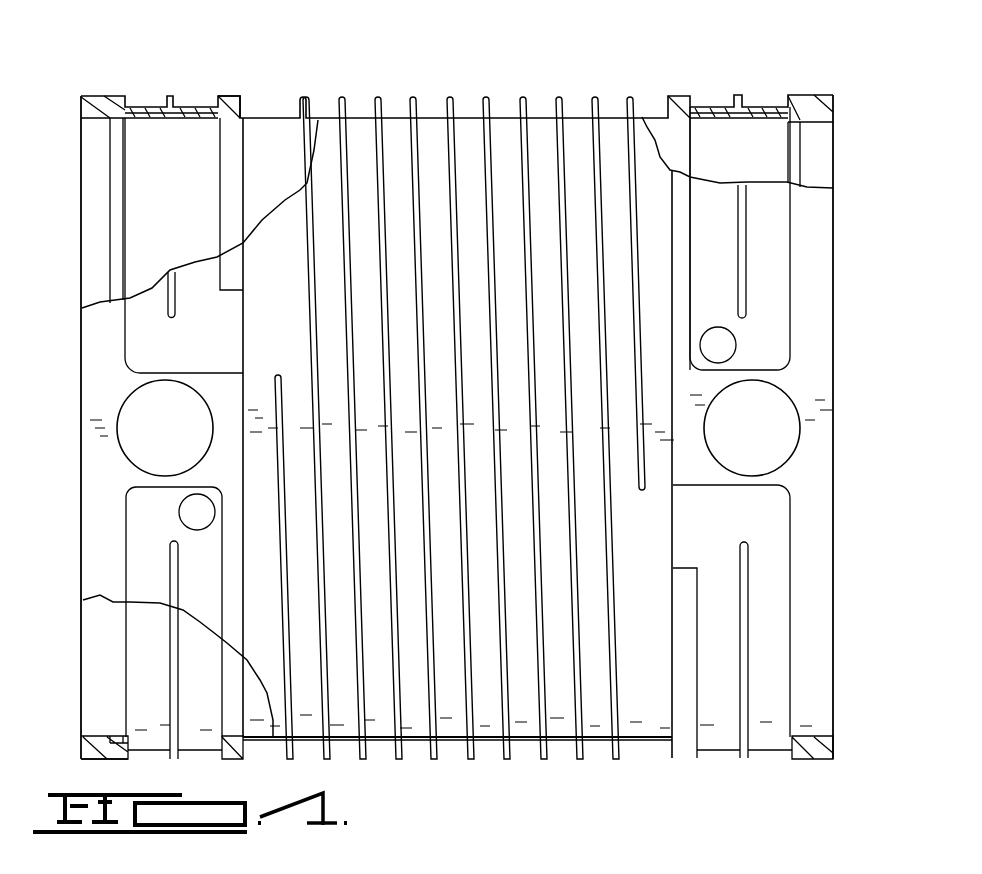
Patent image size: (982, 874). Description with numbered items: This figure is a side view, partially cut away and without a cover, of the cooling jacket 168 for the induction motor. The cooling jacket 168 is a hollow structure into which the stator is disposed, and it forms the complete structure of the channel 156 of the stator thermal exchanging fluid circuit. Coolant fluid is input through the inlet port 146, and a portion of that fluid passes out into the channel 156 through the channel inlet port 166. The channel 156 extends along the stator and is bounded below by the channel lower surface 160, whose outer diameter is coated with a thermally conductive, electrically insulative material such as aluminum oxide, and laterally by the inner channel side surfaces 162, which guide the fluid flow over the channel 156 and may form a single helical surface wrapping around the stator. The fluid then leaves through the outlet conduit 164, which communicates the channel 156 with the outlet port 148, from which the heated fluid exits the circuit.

The inlet port 146 is at (190, 443).
The outlet port 148 is at (778, 443).
The channel 156 is at (397, 323).
The channel lower surface 160 is at (353, 106).
The inner channel side surface 162 is at (520, 100).
The outlet conduit 164 is at (725, 348).
The channel inlet port 166 is at (198, 524).
The cooling jacket 168 is at (240, 117).